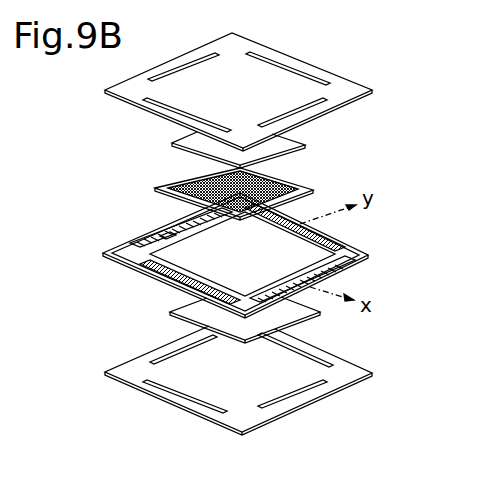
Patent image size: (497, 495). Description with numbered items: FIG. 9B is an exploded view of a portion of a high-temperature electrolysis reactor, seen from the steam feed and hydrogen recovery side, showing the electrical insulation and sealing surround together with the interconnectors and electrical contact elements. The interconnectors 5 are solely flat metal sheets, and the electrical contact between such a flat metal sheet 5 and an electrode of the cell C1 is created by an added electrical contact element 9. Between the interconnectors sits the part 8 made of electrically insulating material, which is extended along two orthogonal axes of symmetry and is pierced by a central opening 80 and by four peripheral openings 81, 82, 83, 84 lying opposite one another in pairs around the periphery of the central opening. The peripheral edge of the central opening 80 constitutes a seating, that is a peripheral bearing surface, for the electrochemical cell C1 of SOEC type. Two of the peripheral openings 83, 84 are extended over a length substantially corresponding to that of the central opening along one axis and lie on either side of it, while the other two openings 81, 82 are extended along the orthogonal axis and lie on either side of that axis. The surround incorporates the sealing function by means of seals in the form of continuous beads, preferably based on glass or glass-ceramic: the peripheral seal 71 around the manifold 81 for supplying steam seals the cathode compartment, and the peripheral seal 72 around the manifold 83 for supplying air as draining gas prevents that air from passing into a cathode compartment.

The interconnector 5 is at (200, 80).
The electrical contact element 9 is at (175, 133).
The peripheral opening 83 is at (295, 219).
The electrochemical cell C1 is at (292, 178).
The electrically insulating part 8 is at (370, 254).
The central opening 80 is at (242, 254).
The peripheral seal 71 is at (127, 242).
The peripheral seal 72 is at (130, 260).
The peripheral opening 81 is at (300, 284).
The peripheral opening 84 is at (198, 287).
The peripheral opening 82 is at (172, 238).